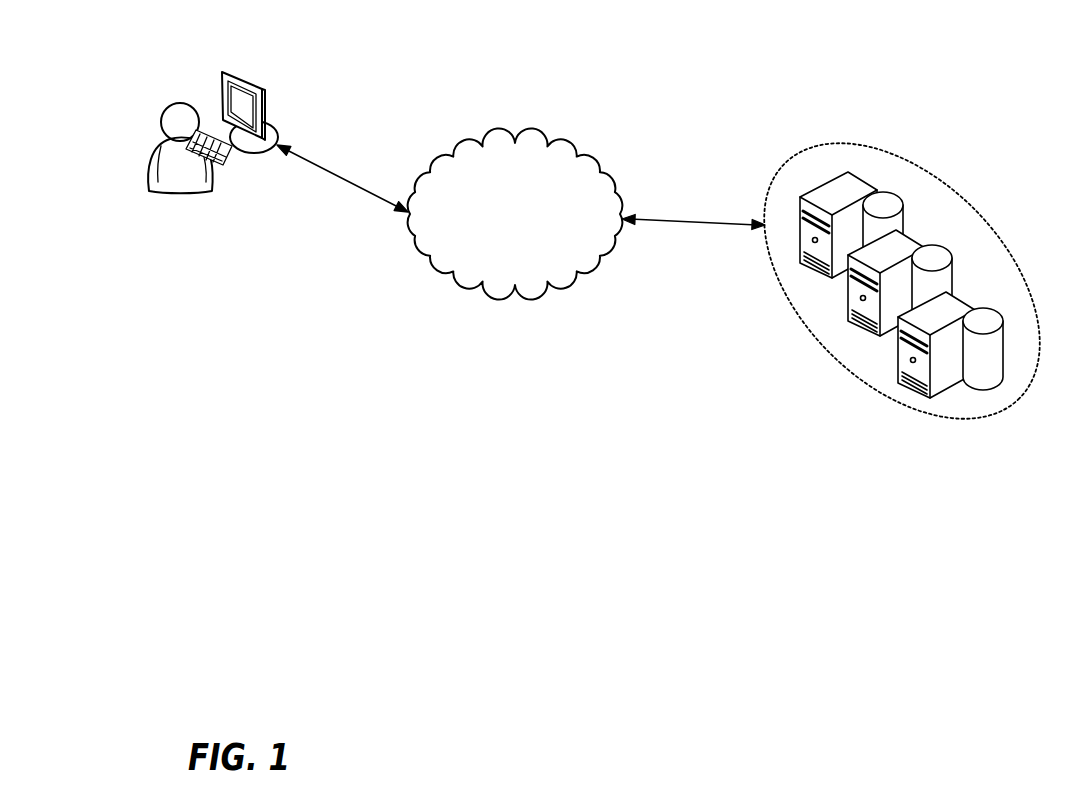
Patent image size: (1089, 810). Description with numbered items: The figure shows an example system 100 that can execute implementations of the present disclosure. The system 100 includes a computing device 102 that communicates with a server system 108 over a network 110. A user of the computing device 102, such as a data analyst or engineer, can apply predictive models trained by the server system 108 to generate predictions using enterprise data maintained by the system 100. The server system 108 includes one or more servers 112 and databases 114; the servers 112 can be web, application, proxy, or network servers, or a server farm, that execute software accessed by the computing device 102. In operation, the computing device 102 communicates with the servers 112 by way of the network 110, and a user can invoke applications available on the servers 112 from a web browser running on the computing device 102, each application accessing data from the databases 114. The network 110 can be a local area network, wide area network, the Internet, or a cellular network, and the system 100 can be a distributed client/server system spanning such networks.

The system 100 is at (760, 50).
The computing device 102 is at (255, 152).
The server system 108 is at (957, 198).
The network 110 is at (517, 143).
The servers 112 is at (828, 182).
The databases 114 is at (880, 193).